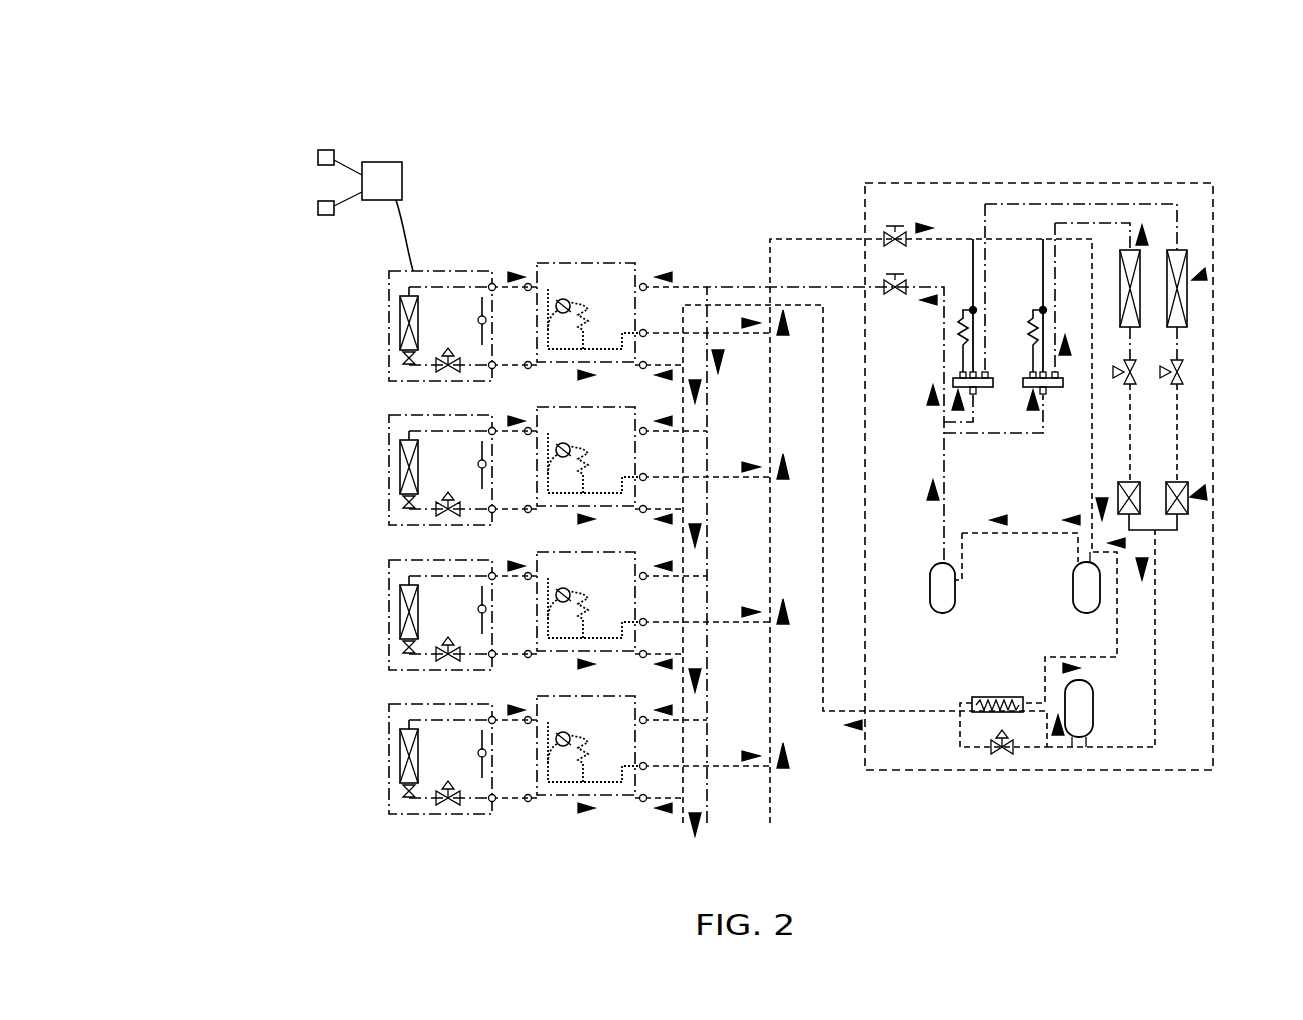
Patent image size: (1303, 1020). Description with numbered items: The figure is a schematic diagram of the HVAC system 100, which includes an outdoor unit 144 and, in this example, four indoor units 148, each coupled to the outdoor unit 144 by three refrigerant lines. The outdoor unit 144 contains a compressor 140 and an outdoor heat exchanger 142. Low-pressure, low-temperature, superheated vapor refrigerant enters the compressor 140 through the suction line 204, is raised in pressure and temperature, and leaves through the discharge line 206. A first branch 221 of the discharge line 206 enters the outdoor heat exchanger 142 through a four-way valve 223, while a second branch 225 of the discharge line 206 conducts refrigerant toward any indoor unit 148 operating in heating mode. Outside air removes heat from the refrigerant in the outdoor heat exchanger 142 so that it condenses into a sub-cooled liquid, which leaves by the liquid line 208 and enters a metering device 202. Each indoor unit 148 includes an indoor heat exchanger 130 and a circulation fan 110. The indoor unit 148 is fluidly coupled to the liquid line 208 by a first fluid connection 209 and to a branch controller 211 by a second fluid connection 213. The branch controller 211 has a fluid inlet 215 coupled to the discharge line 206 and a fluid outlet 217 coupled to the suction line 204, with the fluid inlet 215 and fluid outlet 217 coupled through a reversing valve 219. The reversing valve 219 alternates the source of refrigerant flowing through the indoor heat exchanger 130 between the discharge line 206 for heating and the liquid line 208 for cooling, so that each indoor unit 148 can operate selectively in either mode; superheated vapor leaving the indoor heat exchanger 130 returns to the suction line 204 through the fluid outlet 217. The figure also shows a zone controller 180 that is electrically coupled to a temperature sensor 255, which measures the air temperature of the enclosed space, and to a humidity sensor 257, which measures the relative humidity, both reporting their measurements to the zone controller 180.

The HVAC system 100 is at (265, 141).
The circulation fan 110 is at (485, 337).
The indoor heat exchanger 130 is at (400, 325).
The compressor 140 is at (955, 590).
The outdoor heat exchanger 142 is at (1140, 306).
The outdoor unit 144 is at (1105, 183).
The indoor unit 148 is at (389, 275).
The zone controller 180 is at (402, 181).
The metering device 202 is at (1190, 372).
The suction line 204 is at (770, 568).
The discharge line 206 is at (707, 533).
The liquid line 208 is at (690, 417).
The first fluid connection 209 is at (497, 369).
The branch controller 211 is at (553, 263).
The second fluid connection 213 is at (492, 283).
The fluid inlet 215 is at (643, 283).
The fluid outlet 217 is at (643, 333).
The reversing valve 219 is at (573, 304).
The first branch 221 is at (962, 433).
The four-way valve 223 is at (985, 390).
The second branch 225 is at (940, 283).
The temperature sensor 255 is at (334, 153).
The humidity sensor 257 is at (318, 208).